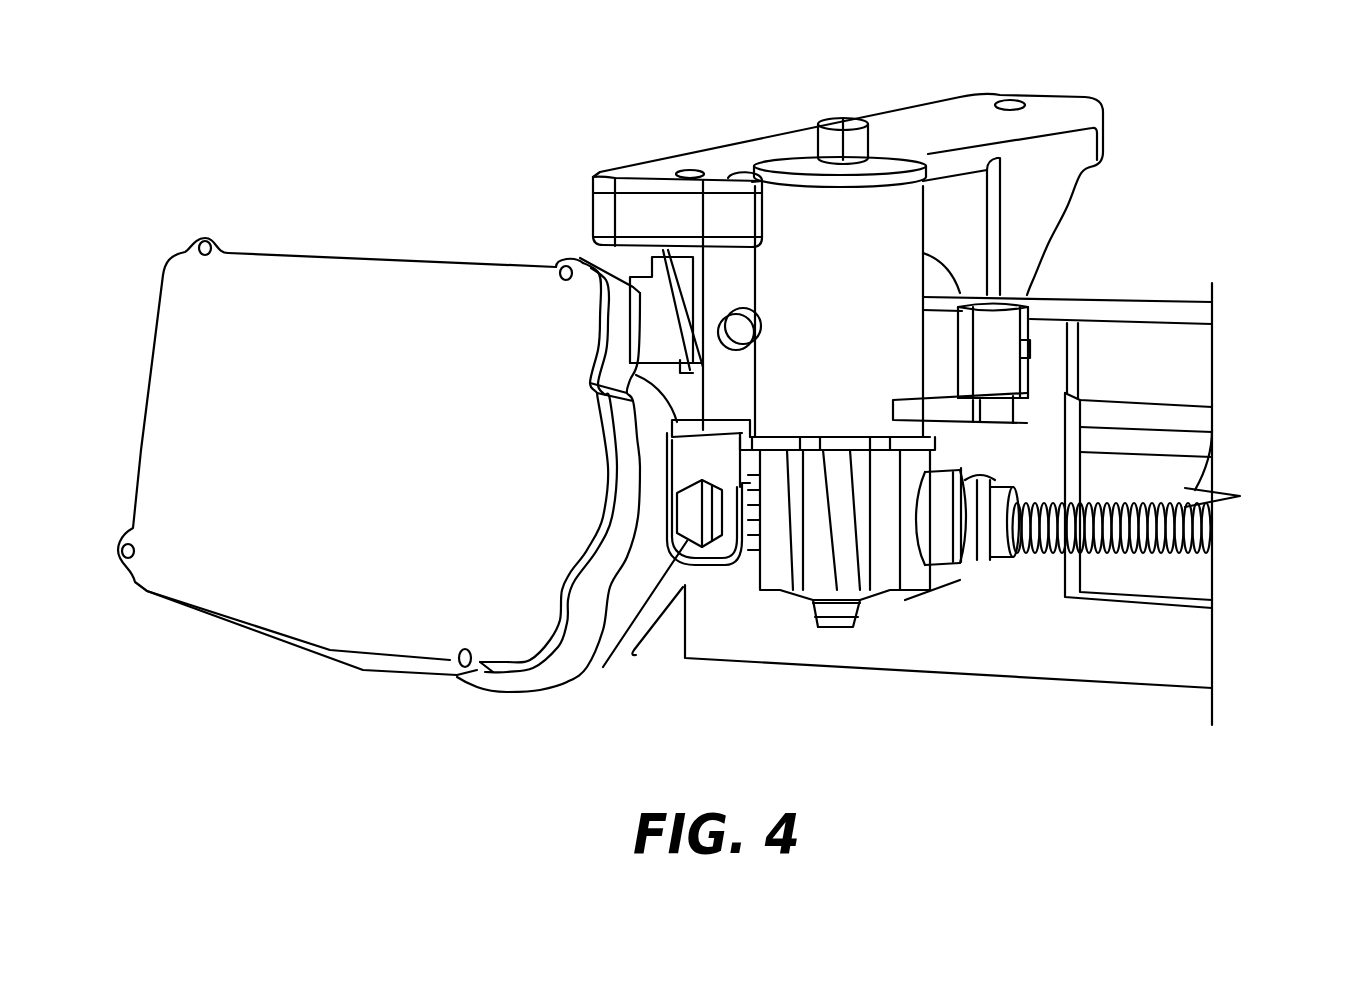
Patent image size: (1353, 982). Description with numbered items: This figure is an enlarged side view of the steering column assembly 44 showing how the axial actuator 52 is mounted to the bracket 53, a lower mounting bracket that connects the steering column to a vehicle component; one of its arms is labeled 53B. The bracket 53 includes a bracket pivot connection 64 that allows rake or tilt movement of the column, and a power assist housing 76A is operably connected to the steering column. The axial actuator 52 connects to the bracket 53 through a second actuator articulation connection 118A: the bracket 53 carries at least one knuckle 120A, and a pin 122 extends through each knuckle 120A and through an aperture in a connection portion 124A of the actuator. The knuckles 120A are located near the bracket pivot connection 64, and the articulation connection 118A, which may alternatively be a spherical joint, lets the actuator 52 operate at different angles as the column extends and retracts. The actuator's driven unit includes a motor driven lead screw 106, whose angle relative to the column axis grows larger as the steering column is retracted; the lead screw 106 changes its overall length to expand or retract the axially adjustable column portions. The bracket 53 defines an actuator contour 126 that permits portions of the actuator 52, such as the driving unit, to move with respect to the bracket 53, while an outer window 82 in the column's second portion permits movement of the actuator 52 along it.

The steering column assembly 44 is at (1238, 152).
The axial actuator 52 is at (839, 104).
The bracket 53 is at (1104, 131).
The bracket arm 53B is at (590, 185).
The bracket pivot connection 64 is at (745, 340).
The power assist housing 76A is at (240, 323).
The outer window 82 is at (1118, 402).
The lead screw 106 is at (1104, 560).
The second actuator articulation connection 118A is at (697, 608).
The knuckle 120A is at (698, 458).
The pin 122 is at (700, 513).
The connection portion 124A is at (752, 572).
The actuator contour 126 is at (750, 172).